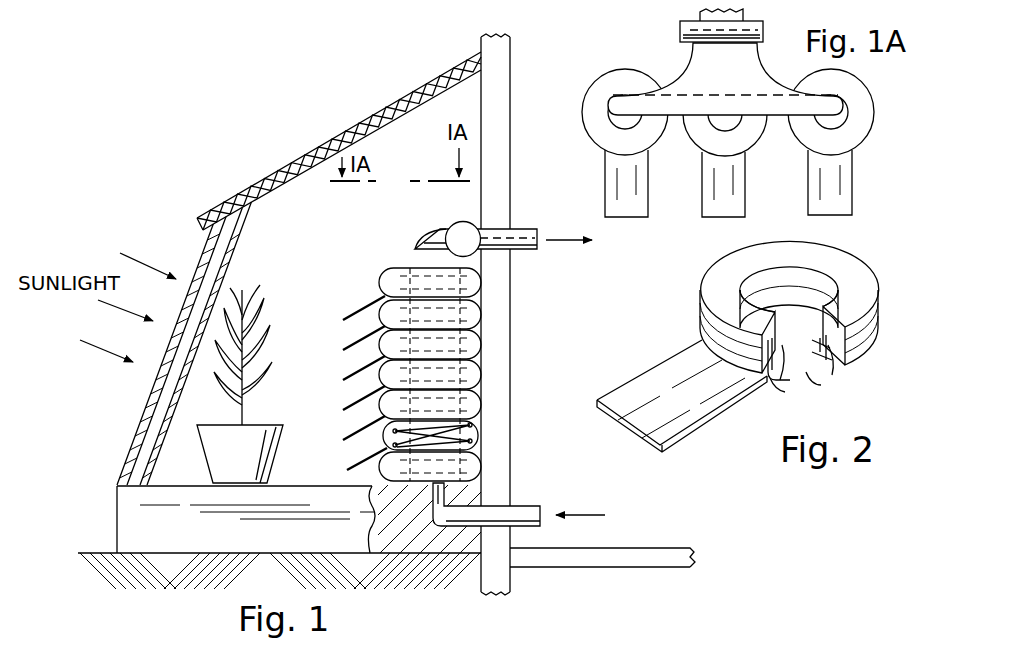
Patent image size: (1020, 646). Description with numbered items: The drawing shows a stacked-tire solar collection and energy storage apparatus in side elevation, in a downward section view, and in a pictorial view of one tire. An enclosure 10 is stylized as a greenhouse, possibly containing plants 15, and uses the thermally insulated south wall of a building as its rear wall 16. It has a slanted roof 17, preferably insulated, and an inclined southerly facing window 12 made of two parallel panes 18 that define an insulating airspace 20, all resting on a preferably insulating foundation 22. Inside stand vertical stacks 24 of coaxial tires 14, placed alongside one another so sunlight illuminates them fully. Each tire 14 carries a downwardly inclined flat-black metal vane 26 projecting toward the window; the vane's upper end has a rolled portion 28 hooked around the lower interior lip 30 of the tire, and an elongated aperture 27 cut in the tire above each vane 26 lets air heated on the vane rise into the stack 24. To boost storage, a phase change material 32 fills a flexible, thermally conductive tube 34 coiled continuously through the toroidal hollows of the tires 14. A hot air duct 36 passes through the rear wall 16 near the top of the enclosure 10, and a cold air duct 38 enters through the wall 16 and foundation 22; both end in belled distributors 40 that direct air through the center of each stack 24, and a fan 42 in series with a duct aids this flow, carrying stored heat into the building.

In FIG. 1, the enclosure 10 is at (285, 145).
In FIG. 1, the window 12 is at (166, 346).
In FIG. 1, the tire 14 is at (474, 400).
In FIG. 2, the tire 14 is at (855, 288).
In FIG. 1, the plants 15 is at (259, 290).
In FIG. 1, the rear wall 16 is at (500, 132).
In FIG. 1, the slanted roof 17 is at (362, 118).
In FIG. 1, the panes 18 is at (147, 409).
In FIG. 1, the airspace 20 is at (136, 438).
In FIG. 1, the foundation 22 is at (128, 526).
In FIG. 1, the vertical stack 24 is at (393, 267).
In FIG. 1A, the vertical stack 24 is at (596, 84).
In FIG. 1, the vane 26 is at (348, 310).
In FIG. 1A, the vane 26 is at (612, 192).
In FIG. 2, the vane 26 is at (668, 373).
In FIG. 1, the aperture 27 is at (382, 440).
In FIG. 2, the aperture 27 is at (696, 338).
In FIG. 2, the rolled portion 28 is at (798, 376).
In FIG. 2, the lower interior lip 30 is at (772, 384).
In FIG. 2, the phase change material 32 is at (818, 386).
In FIG. 1, the tube 34 is at (482, 285).
In FIG. 2, the tube 34 is at (835, 375).
In FIG. 1, the hot air duct 36 is at (522, 229).
In FIG. 1A, the hot air duct 36 is at (745, 13).
In FIG. 1, the cold air duct 38 is at (523, 511).
In FIG. 1, the distributor 40 is at (427, 240).
In FIG. 1A, the distributor 40 is at (660, 84).
In FIG. 1, the fan 42 is at (461, 221).
In FIG. 1A, the fan 42 is at (692, 28).